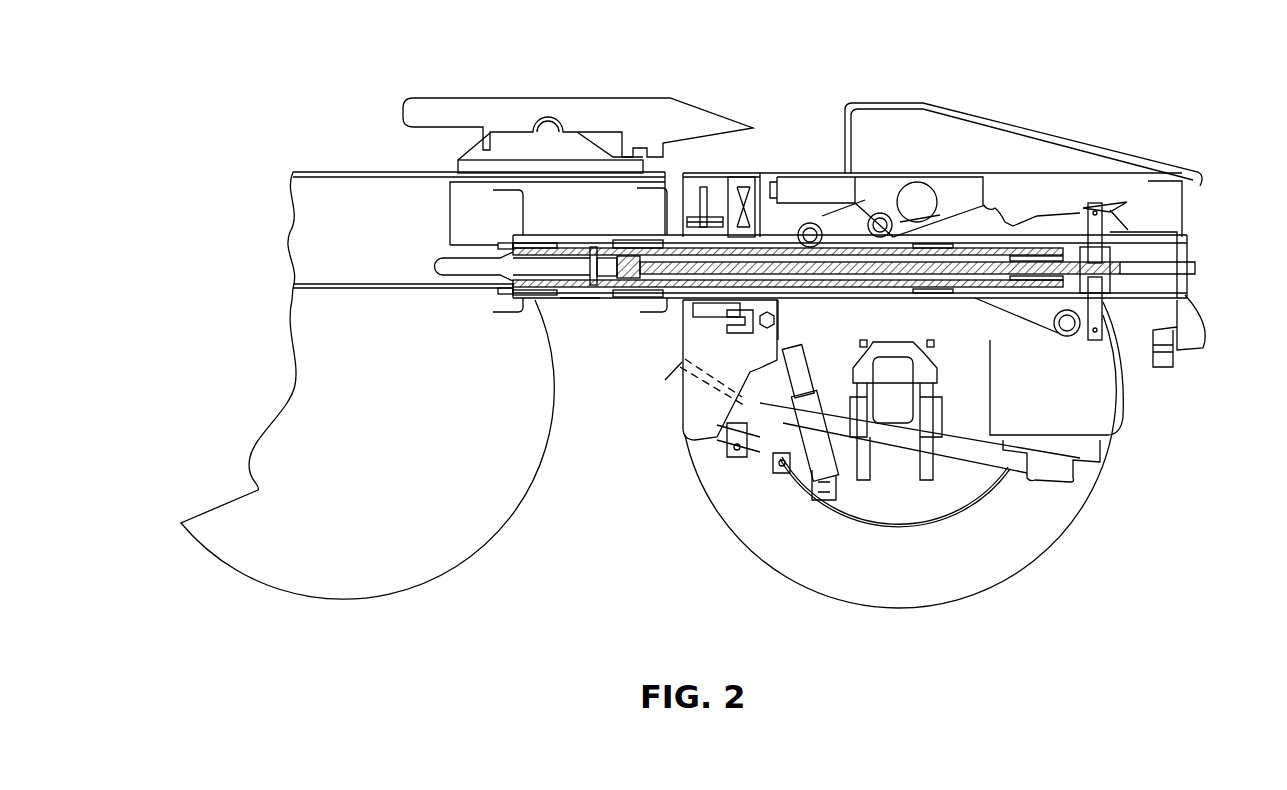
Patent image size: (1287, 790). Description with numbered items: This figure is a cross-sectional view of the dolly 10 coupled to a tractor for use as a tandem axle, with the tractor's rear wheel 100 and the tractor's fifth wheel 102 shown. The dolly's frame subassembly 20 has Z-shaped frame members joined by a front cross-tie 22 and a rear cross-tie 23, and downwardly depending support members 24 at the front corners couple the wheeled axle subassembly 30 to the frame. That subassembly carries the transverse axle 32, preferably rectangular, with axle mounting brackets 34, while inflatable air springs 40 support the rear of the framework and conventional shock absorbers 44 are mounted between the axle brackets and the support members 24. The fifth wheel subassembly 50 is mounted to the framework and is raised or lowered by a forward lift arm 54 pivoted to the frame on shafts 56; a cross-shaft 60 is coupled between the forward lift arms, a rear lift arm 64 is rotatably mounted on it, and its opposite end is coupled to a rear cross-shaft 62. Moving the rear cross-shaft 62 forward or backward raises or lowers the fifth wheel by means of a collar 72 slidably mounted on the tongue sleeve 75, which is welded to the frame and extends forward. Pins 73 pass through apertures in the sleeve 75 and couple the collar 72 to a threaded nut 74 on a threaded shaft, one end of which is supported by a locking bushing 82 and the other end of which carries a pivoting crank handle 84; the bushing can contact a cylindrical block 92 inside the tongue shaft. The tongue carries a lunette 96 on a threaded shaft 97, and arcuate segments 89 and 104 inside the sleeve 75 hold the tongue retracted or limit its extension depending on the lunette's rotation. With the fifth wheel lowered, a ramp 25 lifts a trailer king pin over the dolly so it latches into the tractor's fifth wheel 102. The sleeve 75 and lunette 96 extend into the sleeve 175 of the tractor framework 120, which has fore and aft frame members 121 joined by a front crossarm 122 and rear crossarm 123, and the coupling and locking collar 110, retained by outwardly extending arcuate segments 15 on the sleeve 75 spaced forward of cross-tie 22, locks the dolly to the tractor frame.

The dolly 10 is at (861, 78).
The arcuate segments 15 is at (729, 232).
The frame subassembly 20 is at (713, 170).
The front cross-tie 22 is at (758, 180).
The rear cross-tie 23 is at (1185, 218).
The support members 24 is at (682, 422).
The ramp 25 is at (993, 123).
The wheeled axle subassembly 30 is at (938, 390).
The axle 32 is at (898, 357).
The axle mounting brackets 34 is at (937, 347).
The air springs 40 is at (1117, 407).
The shock absorbers 44 is at (802, 372).
The fifth wheel subassembly 50 is at (1085, 182).
The forward lift arm 54 is at (837, 223).
The shafts 56 is at (800, 232).
The cross-shaft 60 is at (880, 213).
The rear cross-shaft 62 is at (1058, 333).
The rear lift arm 64 is at (925, 229).
The collar 72 is at (1143, 232).
The pins 73 is at (1098, 202).
The threaded nut 74 is at (1112, 255).
The tongue sleeve 75 is at (823, 299).
The locking bushing 82 is at (633, 290).
The crank handle 84 is at (1206, 321).
The arcuate segments 89 is at (510, 241).
The cylindrical block 92 is at (1048, 260).
The lunette 96 is at (467, 284).
The threaded shaft 97 is at (630, 262).
The rear wheel 100 is at (417, 573).
The fifth wheel 102 is at (577, 98).
The arcuate segments 104 is at (650, 242).
The coupling and locking collar 110 is at (688, 328).
The tractor framework 120 is at (362, 172).
The frame members 121 is at (450, 206).
The front crossarm 122 is at (527, 215).
The rear crossarm 123 is at (663, 204).
The sleeve 175 is at (588, 300).